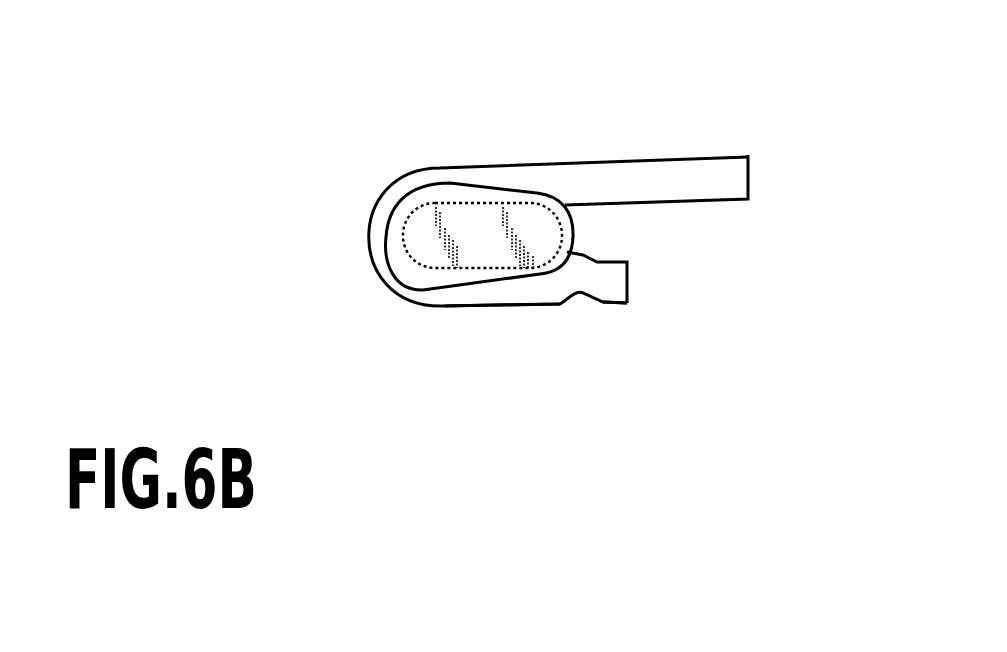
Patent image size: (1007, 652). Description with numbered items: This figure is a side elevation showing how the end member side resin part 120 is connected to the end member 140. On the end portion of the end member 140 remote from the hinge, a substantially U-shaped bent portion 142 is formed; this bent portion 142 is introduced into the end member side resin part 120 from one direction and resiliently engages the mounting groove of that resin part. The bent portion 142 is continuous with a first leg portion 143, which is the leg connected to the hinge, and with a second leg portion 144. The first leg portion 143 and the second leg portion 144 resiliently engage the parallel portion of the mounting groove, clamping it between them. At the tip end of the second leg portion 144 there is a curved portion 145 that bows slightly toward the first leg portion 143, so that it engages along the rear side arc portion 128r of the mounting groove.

The end member 140 is at (531, 122).
The bent portion 142 is at (365, 231).
The first leg portion 143 is at (500, 172).
The second leg portion 144 is at (462, 298).
The curved portion 145 is at (580, 258).
The end member side resin part 120 is at (404, 201).
The rear side arc portion 128r is at (572, 202).